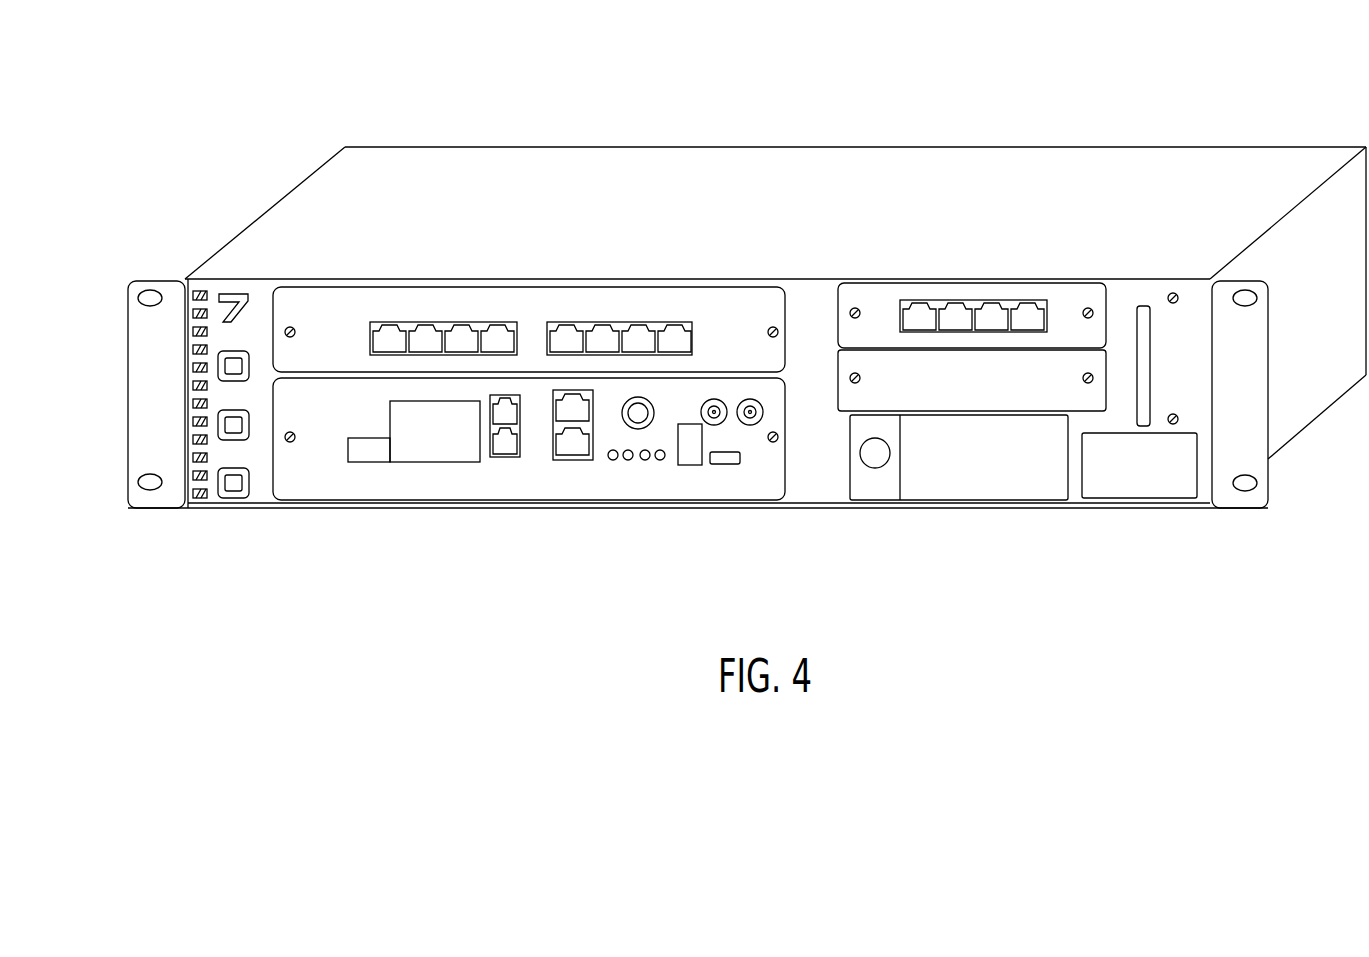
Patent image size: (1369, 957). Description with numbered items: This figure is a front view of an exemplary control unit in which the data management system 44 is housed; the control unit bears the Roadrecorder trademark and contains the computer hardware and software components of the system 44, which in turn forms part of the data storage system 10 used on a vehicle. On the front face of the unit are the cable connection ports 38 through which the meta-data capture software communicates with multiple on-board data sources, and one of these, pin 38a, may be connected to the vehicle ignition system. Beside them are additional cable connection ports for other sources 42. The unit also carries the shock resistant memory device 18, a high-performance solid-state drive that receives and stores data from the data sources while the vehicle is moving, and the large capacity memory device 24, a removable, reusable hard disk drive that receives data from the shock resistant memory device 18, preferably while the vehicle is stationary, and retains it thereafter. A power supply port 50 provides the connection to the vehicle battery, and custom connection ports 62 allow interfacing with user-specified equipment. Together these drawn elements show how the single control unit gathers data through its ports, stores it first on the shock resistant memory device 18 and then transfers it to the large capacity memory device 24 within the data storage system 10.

The data storage system 10 is at (908, 105).
The data management system 44 is at (723, 103).
The cable connection ports 38 is at (400, 294).
The pin 38a is at (382, 333).
The additional cable connection ports for other sources 42 is at (630, 315).
The shock resistant memory device 18 is at (1083, 352).
The power supply port 50 is at (368, 450).
The custom connection ports 62 is at (529, 468).
The large capacity memory device 24 is at (1000, 480).